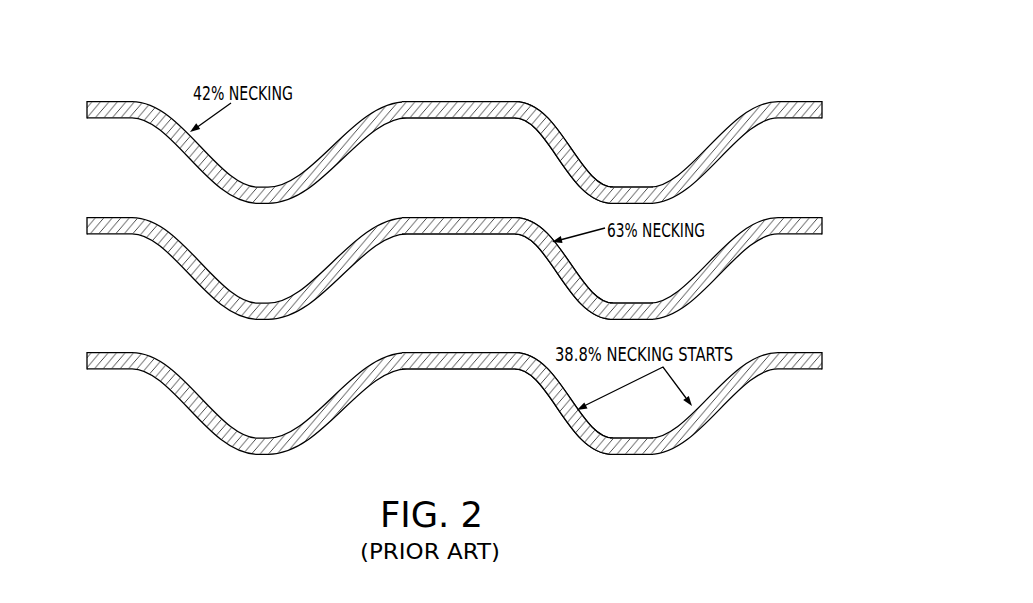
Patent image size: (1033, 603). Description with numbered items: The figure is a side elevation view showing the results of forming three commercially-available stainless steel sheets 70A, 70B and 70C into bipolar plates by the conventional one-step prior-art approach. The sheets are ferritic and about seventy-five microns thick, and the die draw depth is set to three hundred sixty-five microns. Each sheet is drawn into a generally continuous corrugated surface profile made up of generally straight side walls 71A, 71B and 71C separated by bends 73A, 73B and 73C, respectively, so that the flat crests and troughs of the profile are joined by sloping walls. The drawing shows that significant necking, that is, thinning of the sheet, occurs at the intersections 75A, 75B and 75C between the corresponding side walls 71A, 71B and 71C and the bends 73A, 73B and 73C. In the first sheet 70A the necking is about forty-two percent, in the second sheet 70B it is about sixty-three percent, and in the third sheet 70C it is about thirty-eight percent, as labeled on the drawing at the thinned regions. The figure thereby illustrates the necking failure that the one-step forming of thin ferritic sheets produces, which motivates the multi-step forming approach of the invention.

The first stainless steel sheet 70A is at (439, 106).
The second stainless steel sheet 70B is at (439, 222).
The third stainless steel sheet 70C is at (439, 357).
The side wall 71A is at (587, 176).
The side wall 71B is at (583, 281).
The side wall 71C is at (548, 399).
The bend 73A is at (469, 100).
The bend 73B is at (452, 217).
The bend 73C is at (452, 352).
The intersection 75A is at (536, 104).
The intersection 75B is at (536, 220).
The intersection 75C is at (535, 352).